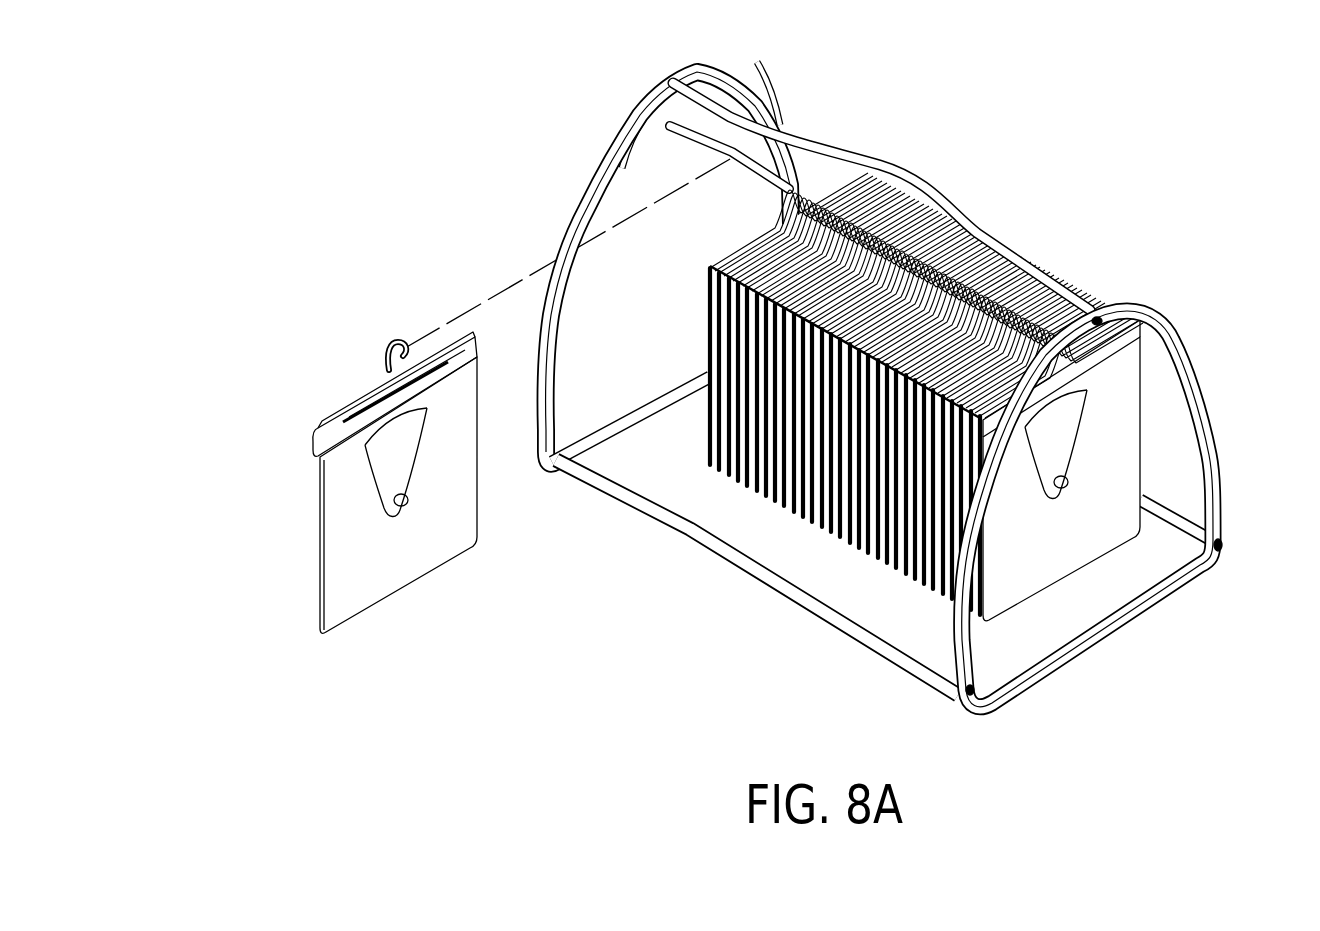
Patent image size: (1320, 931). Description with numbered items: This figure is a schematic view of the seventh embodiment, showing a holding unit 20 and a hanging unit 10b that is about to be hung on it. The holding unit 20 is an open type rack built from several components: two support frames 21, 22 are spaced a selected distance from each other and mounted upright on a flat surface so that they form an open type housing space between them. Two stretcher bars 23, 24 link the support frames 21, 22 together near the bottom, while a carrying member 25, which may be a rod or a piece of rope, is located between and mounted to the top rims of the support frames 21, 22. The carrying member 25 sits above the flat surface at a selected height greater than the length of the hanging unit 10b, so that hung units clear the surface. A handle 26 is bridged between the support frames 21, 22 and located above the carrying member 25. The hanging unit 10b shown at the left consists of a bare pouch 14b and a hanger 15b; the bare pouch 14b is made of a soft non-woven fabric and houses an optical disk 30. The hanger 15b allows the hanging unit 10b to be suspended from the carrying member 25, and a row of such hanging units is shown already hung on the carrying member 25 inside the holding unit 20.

The hanging unit 10b is at (342, 435).
The bare pouch 14b is at (343, 595).
The hanger 15b is at (363, 403).
The optical disk 30 is at (402, 462).
The holding unit 20 is at (867, 371).
The support frame 21 is at (593, 178).
The support frame 22 is at (1110, 627).
The stretcher bar 23 is at (887, 640).
The stretcher bar 24 is at (1140, 497).
The carrying member 25 is at (743, 160).
The handle 26 is at (893, 178).